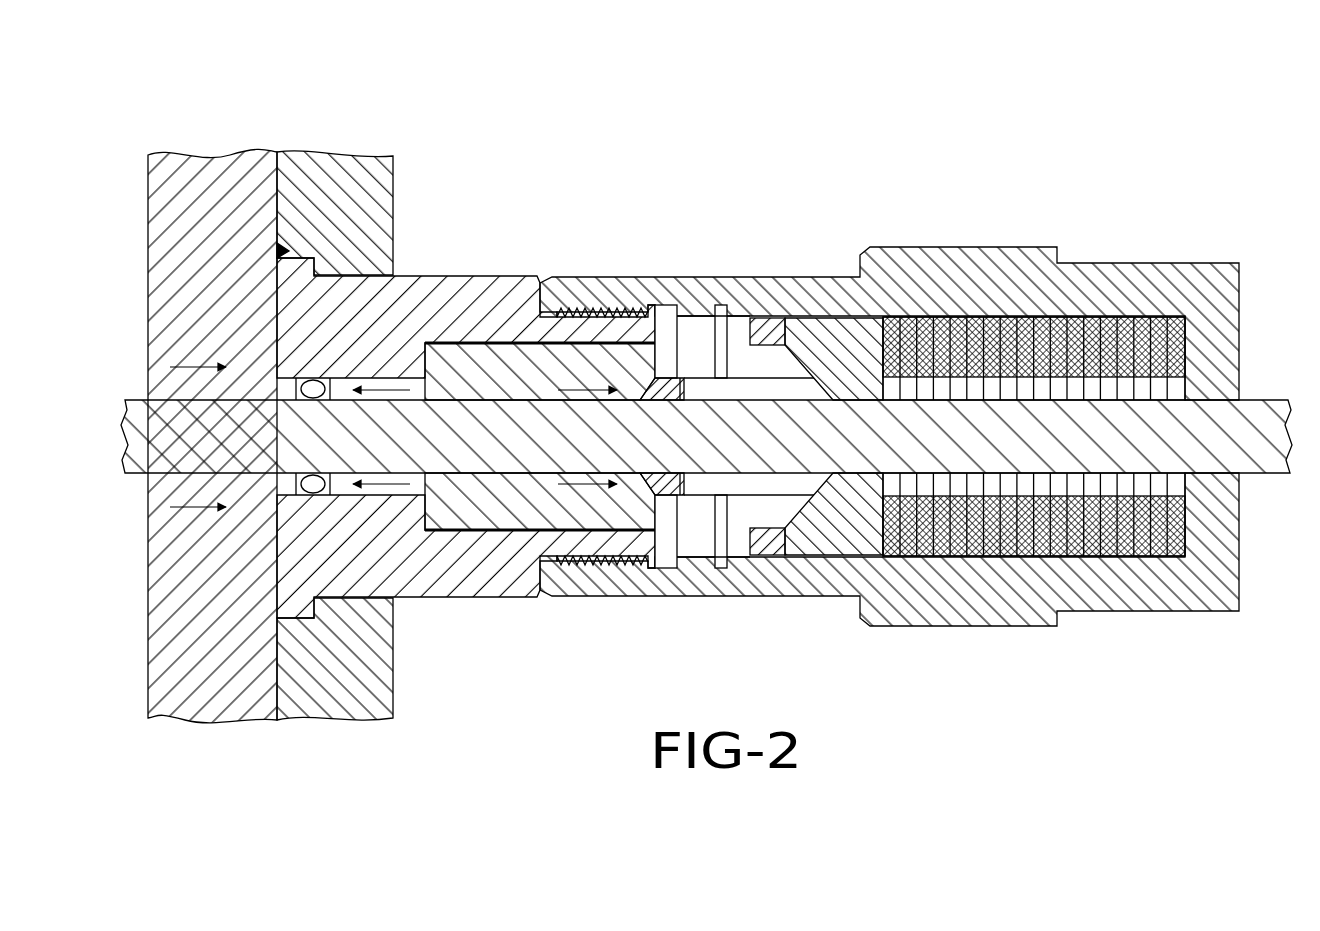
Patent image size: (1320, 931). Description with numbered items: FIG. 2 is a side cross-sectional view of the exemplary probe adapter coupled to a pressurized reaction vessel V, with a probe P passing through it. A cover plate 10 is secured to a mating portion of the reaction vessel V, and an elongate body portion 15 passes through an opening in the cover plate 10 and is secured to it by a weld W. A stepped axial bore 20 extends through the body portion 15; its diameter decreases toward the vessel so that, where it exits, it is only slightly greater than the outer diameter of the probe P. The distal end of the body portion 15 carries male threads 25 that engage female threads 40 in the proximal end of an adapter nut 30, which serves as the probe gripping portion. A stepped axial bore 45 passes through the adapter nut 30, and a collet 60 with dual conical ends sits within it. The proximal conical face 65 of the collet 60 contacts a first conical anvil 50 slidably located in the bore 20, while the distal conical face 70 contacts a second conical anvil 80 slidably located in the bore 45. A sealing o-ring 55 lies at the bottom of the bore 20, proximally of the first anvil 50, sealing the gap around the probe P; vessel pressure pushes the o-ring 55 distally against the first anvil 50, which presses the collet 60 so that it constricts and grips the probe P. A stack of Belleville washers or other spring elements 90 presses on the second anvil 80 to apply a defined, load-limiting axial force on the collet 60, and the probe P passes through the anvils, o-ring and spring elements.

The reaction vessel V is at (195, 187).
The weld W is at (278, 617).
The probe P is at (1258, 405).
The cover plate 10 is at (327, 177).
The body portion 15 is at (503, 290).
The axial bore 20 is at (477, 348).
The male threads 25 is at (567, 566).
The adapter nut 30 is at (588, 286).
The female threads 40 is at (607, 306).
The axial bore 45 is at (1090, 322).
The first conical anvil 50 is at (518, 510).
The sealing o-ring 55 is at (308, 492).
The collet 60 is at (769, 485).
The conical face 65 is at (648, 480).
The conical face 70 is at (830, 477).
The second conical anvil 80 is at (836, 346).
The spring elements 90 is at (1175, 530).